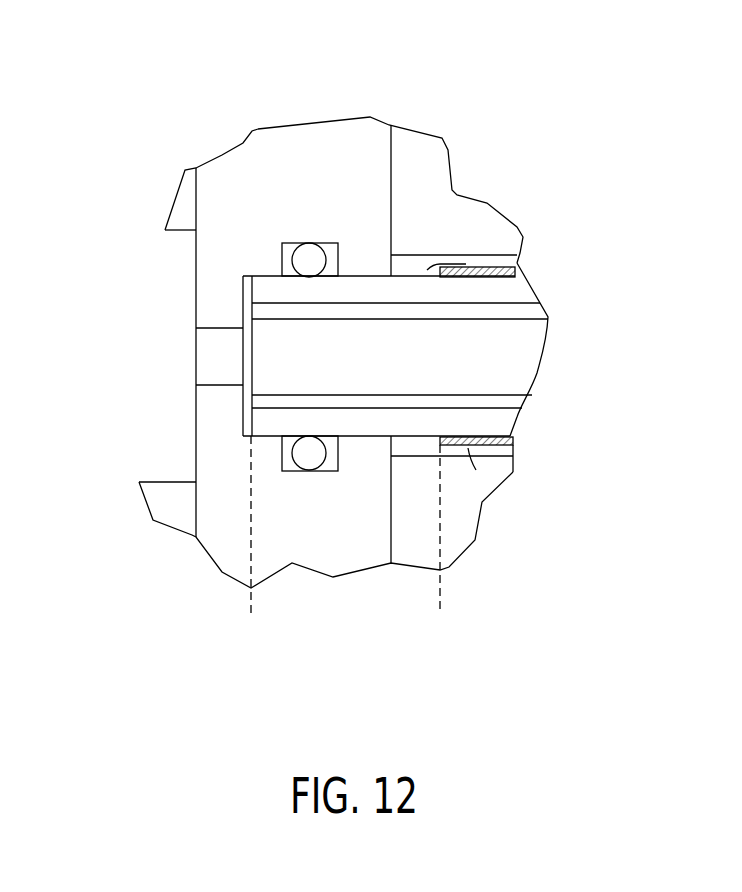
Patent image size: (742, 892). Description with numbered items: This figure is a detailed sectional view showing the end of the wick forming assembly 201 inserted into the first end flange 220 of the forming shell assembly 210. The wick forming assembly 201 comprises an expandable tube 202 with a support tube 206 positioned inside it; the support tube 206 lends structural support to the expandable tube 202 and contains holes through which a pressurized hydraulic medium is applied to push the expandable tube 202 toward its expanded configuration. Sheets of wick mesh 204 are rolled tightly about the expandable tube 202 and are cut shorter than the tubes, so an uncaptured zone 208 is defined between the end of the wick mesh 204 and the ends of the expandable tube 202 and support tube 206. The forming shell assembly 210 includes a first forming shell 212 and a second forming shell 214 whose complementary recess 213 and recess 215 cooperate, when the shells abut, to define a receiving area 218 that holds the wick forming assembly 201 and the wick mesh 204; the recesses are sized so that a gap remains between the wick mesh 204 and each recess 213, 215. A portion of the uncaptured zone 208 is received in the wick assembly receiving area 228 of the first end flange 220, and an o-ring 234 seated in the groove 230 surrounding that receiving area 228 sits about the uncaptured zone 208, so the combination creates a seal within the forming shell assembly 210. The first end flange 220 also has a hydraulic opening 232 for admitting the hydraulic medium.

The wick forming assembly 201 is at (556, 376).
The expandable tube 202 is at (503, 293).
The wick mesh 204 is at (483, 267).
The support tube 206 is at (520, 313).
The uncaptured zone 208 is at (440, 613).
The forming shell assembly 210 is at (530, 130).
The first forming shell 212 is at (425, 152).
The recess 213 is at (452, 255).
The second forming shell 214 is at (463, 525).
The recess 215 is at (493, 456).
The receiving area 218 is at (532, 460).
The first end flange 220 is at (237, 203).
The wick assembly receiving area 228 is at (248, 250).
The groove 230 is at (282, 243).
The hydraulic opening 232 is at (196, 350).
The o-ring 234 is at (304, 260).